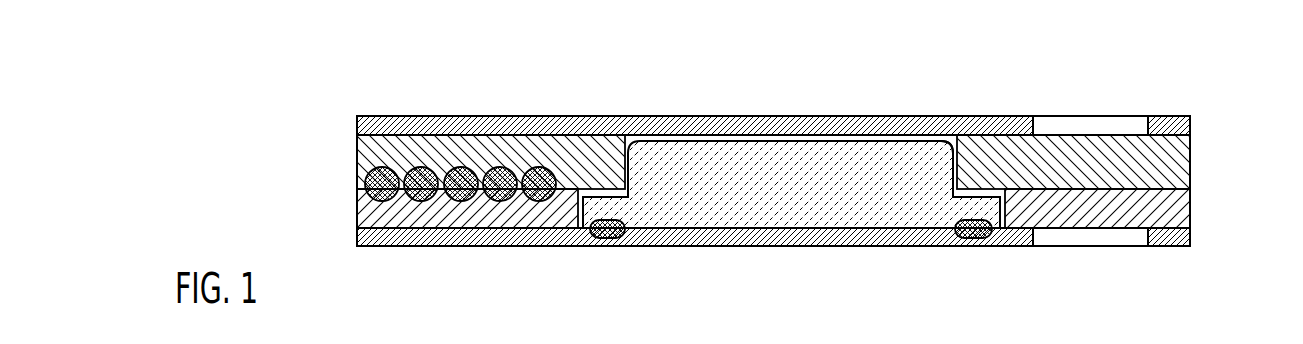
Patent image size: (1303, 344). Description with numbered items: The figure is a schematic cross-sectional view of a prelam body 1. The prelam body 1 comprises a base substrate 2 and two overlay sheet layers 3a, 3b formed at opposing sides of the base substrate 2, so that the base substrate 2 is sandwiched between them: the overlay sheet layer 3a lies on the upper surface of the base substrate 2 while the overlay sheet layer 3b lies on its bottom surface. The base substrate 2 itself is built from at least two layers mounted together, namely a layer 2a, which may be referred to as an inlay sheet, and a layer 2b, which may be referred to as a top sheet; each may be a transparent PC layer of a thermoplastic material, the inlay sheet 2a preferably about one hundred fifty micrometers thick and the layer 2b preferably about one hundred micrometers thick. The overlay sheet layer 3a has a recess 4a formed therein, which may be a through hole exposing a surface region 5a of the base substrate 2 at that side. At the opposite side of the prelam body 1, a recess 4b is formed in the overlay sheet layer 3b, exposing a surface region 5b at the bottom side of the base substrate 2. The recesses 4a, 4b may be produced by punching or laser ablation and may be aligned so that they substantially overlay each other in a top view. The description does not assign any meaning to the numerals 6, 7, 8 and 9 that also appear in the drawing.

The prelam body 1 is at (391, 79).
The base substrate 2 is at (825, 181).
The inlay sheet 2a is at (1191, 160).
The top sheet 2b is at (803, 208).
The overlay sheet layer 3a is at (1191, 123).
The overlay sheet layer 3b is at (1191, 232).
The recess 4a is at (1092, 101).
The recess 4b is at (1092, 263).
The surface region 5a is at (1060, 134).
The surface region 5b is at (1061, 236).
The molded body 6 is at (782, 194).
The solder balls 7 is at (366, 177).
The molded body edge 8 is at (949, 140).
The sealing elements 9 is at (605, 240).